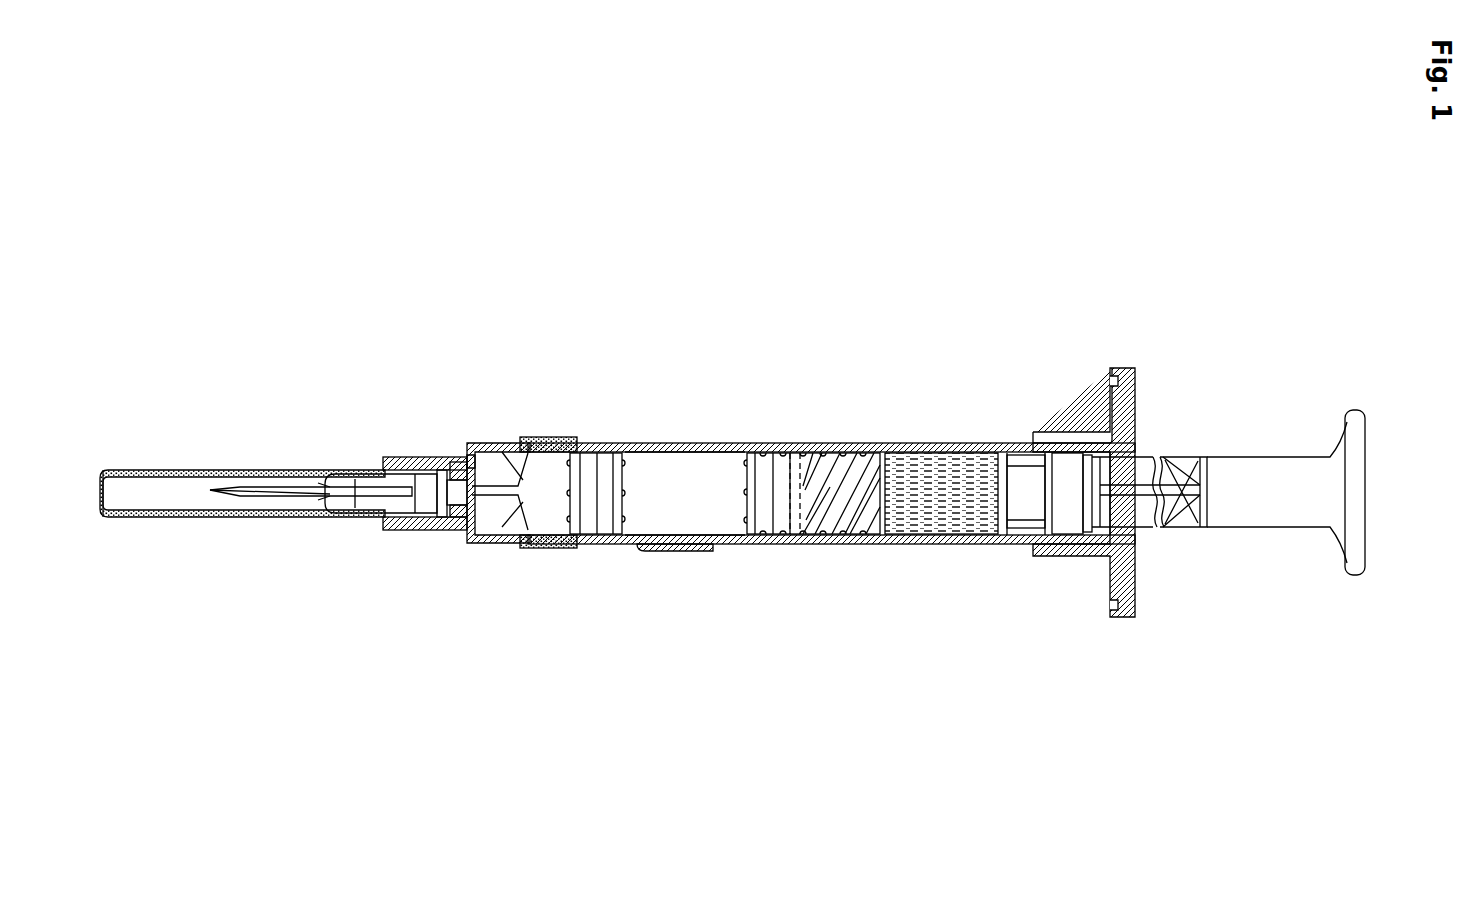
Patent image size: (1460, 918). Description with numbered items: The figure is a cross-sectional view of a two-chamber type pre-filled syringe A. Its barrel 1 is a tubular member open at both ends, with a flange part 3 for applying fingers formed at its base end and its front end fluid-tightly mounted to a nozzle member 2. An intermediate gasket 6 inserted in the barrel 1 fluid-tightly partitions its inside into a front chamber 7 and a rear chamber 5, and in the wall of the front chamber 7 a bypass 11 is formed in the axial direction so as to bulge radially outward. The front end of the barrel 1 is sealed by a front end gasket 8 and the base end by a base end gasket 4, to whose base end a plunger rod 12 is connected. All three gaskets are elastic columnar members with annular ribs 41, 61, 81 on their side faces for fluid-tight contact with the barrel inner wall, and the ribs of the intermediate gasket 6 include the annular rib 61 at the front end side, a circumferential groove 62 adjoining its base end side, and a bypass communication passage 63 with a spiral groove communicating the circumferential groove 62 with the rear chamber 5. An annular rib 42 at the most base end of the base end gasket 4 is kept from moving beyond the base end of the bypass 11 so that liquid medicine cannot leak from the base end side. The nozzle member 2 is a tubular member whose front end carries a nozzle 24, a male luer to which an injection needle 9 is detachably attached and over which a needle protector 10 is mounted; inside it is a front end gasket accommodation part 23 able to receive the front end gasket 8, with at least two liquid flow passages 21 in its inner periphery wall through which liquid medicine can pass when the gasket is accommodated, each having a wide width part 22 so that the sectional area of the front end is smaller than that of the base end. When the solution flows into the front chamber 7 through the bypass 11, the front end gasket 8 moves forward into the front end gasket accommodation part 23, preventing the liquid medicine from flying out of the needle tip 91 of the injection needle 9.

The pre-filled syringe A is at (820, 258).
The barrel 1 is at (668, 447).
The nozzle member 2 is at (470, 445).
The flange part 3 is at (1133, 367).
The base end gasket 4 is at (1035, 495).
The rear chamber 5 is at (943, 510).
The intermediate gasket 6 is at (802, 485).
The front chamber 7 is at (653, 500).
The front end gasket 8 is at (592, 458).
The injection needle 9 is at (385, 478).
The needle protector 10 is at (243, 468).
The bypass 11 is at (677, 545).
The plunger rod 12 is at (1230, 455).
The liquid flow passage 21 is at (437, 520).
The wide width part 22 is at (500, 450).
The front end gasket accommodation part 23 is at (520, 520).
The nozzle 24 is at (462, 455).
The annular rib 41 is at (1030, 500).
The annular rib 42 is at (1058, 455).
The annular rib 61 is at (777, 483).
The circumferential groove 62 is at (800, 480).
The bypass communication passage 63 is at (840, 480).
The annular rib 81 is at (598, 542).
The needle tip 91 is at (237, 500).